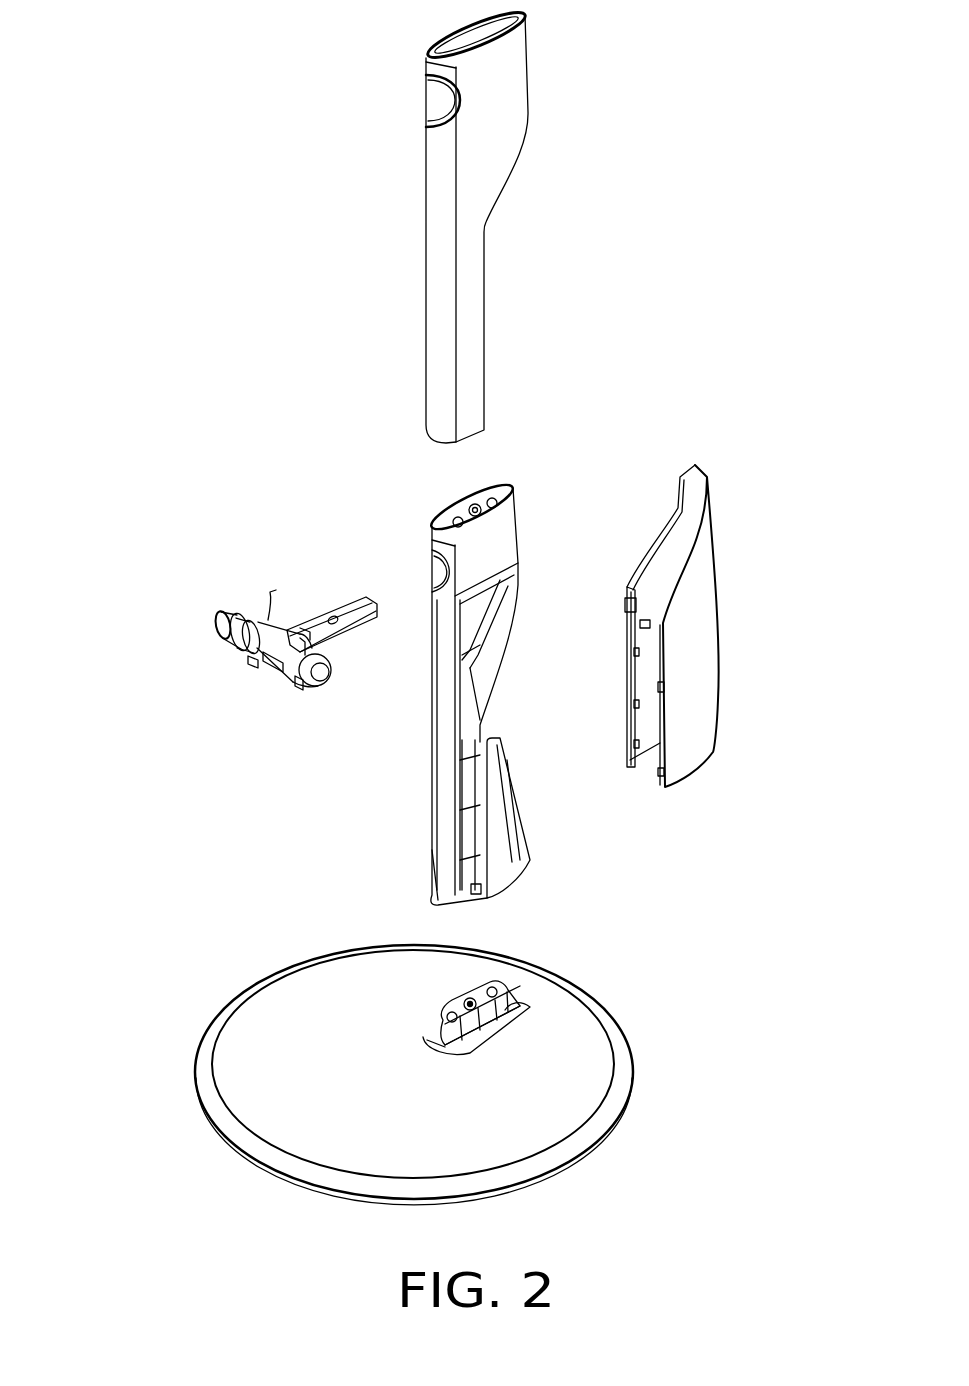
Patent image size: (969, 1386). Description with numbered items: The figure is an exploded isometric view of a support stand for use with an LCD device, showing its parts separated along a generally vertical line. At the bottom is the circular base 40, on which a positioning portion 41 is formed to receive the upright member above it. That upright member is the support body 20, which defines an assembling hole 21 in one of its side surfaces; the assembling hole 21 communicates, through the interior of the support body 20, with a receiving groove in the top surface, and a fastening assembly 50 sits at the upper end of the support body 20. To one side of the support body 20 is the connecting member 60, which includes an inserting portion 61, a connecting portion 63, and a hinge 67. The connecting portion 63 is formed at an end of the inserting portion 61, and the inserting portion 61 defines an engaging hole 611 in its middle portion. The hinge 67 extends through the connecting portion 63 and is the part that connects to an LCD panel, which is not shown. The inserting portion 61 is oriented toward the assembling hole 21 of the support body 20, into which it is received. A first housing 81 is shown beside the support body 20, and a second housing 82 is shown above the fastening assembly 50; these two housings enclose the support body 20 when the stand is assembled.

The support body 20 is at (497, 842).
The assembling hole 21 is at (430, 568).
The base 40 is at (617, 1102).
The positioning portion 41 is at (507, 995).
The fastening assembly 50 is at (478, 488).
The connecting member 60 is at (190, 600).
The inserting portion 61 is at (357, 607).
The engaging hole 611 is at (333, 616).
The connecting portion 63 is at (257, 660).
The hinge 67 is at (223, 640).
The first housing 81 is at (693, 685).
The second housing 82 is at (503, 92).